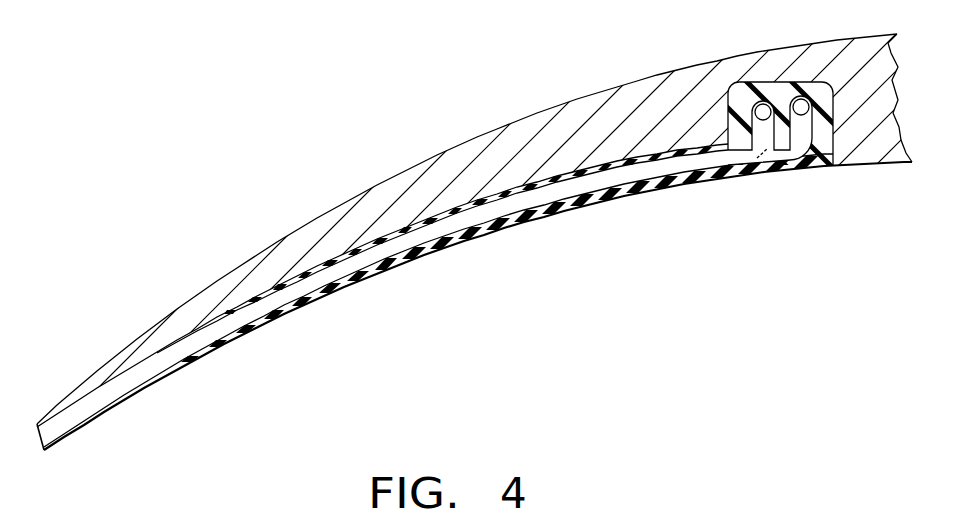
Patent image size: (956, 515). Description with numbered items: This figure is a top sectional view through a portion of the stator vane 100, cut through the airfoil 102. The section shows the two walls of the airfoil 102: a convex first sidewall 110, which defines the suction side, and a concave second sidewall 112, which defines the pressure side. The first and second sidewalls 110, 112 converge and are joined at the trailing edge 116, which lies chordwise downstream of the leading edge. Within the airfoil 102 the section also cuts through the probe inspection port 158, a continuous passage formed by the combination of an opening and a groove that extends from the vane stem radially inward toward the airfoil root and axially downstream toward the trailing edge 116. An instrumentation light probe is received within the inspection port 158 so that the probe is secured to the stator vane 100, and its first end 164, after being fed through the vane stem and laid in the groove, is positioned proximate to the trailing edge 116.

The stator vane 100 is at (382, 76).
The airfoil 102 is at (388, 177).
The first sidewall 110 is at (283, 237).
The second sidewall 112 is at (350, 292).
The trailing edge 116 is at (32, 436).
The probe inspection port 158 is at (814, 199).
The first end 164 is at (40, 452).